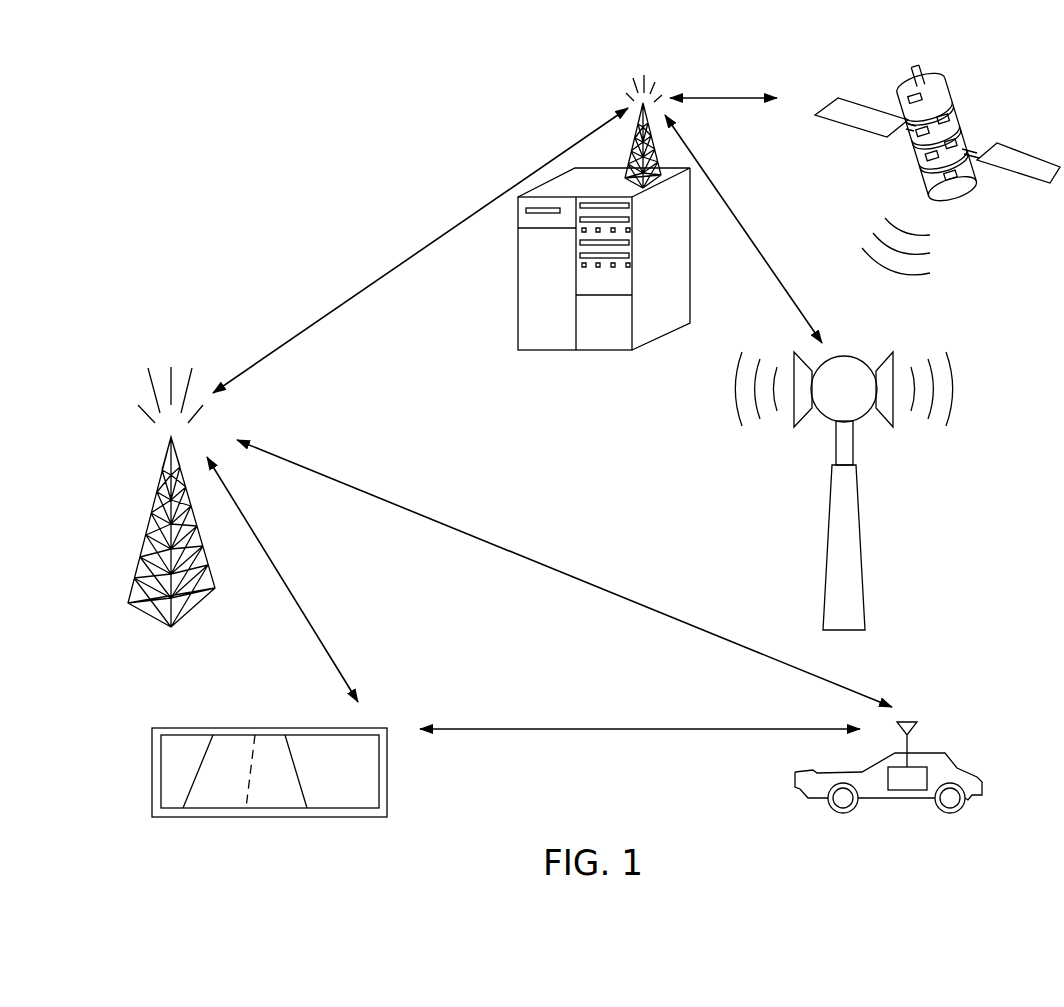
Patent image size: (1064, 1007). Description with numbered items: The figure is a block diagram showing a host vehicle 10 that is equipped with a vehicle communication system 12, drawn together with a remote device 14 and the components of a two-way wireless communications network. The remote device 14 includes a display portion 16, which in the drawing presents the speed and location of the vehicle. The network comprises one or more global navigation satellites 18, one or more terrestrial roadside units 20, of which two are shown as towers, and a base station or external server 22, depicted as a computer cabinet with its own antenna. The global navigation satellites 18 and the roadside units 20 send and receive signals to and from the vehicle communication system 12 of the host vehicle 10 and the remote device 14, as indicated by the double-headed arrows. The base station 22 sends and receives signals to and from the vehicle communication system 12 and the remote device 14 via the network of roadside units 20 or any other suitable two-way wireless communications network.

The host vehicle 10 is at (909, 755).
The vehicle communication system 12 is at (922, 760).
The remote device 14 is at (271, 742).
The display portion 16 is at (182, 755).
The global navigation satellite 18 is at (980, 100).
The roadside unit 20 is at (155, 484).
The base station 22 is at (662, 338).